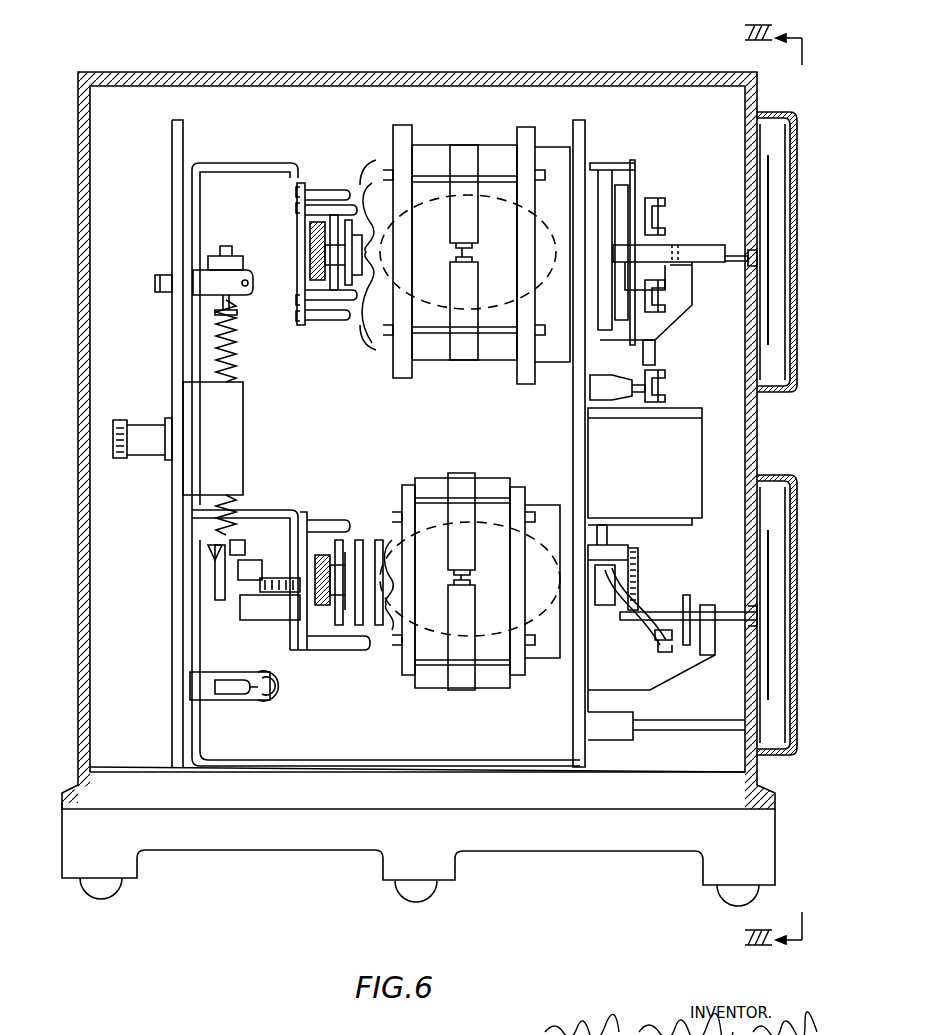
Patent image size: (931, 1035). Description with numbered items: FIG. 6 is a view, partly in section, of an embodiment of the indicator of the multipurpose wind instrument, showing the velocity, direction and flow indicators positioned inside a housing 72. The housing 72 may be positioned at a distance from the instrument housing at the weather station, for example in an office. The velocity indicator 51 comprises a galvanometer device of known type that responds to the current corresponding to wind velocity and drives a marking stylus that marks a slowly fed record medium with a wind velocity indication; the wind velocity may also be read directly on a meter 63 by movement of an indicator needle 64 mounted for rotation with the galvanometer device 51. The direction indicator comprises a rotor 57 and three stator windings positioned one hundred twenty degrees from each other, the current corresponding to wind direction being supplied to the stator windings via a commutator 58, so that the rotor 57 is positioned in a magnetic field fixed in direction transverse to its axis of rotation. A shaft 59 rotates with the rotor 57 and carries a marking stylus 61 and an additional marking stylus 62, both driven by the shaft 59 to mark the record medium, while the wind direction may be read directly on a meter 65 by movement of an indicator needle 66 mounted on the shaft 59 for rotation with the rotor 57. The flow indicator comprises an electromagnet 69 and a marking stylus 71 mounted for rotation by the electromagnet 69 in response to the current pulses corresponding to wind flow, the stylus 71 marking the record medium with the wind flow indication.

The velocity indicator 51 is at (433, 620).
The rotor 57 is at (366, 240).
The commutator 58 is at (338, 272).
The shaft 59 is at (660, 252).
The marking stylus 61 is at (670, 305).
The additional marking stylus 62 is at (655, 200).
The meter 63 is at (772, 512).
The indicator needle 64 is at (772, 635).
The meter 65 is at (772, 302).
The indicator needle 66 is at (772, 200).
The electromagnet 69 is at (685, 457).
The marking stylus 71 is at (665, 398).
The housing 72 is at (152, 72).